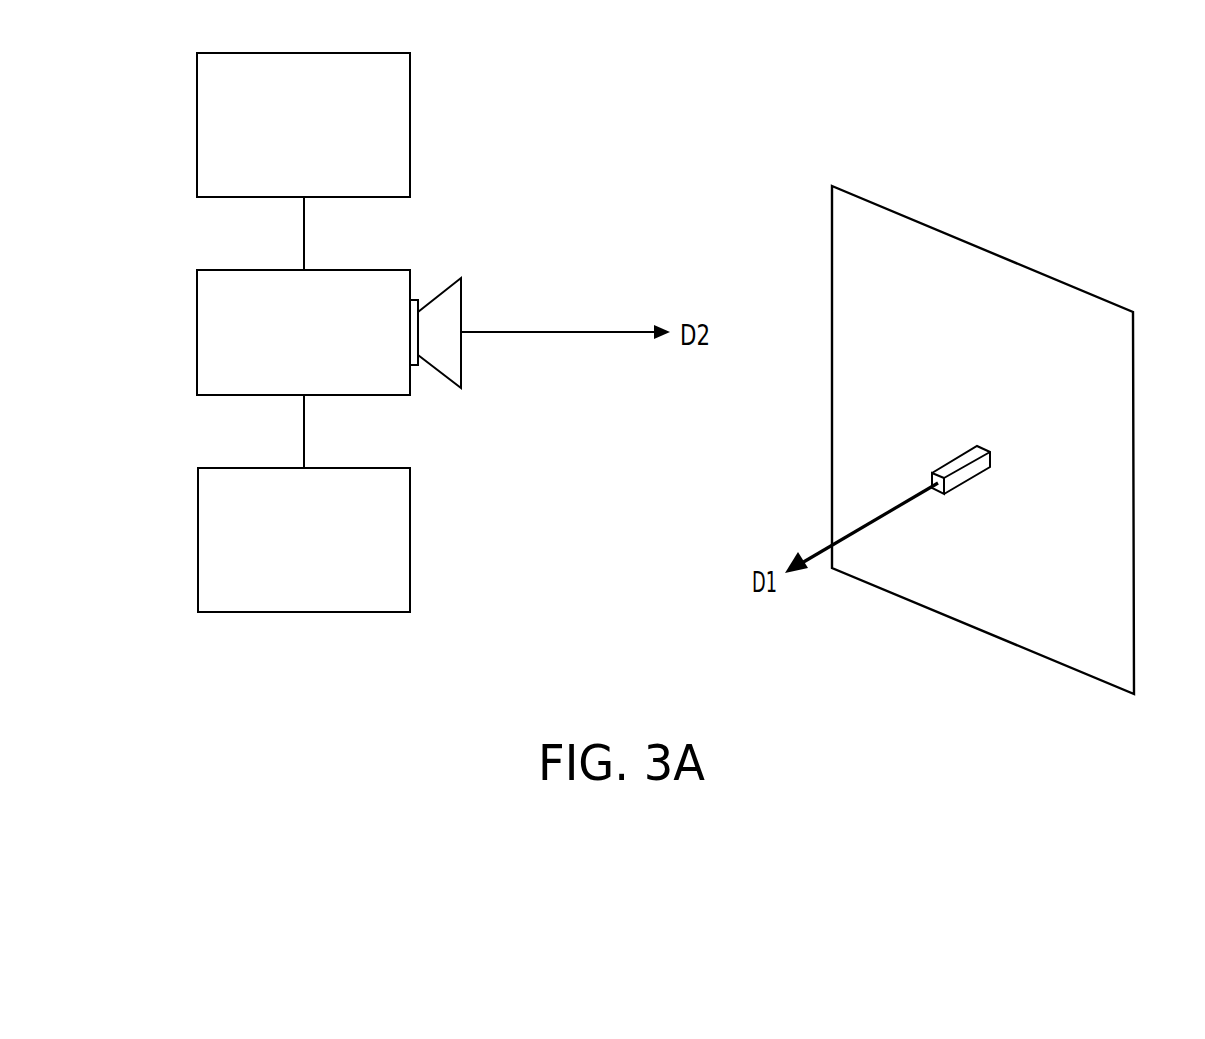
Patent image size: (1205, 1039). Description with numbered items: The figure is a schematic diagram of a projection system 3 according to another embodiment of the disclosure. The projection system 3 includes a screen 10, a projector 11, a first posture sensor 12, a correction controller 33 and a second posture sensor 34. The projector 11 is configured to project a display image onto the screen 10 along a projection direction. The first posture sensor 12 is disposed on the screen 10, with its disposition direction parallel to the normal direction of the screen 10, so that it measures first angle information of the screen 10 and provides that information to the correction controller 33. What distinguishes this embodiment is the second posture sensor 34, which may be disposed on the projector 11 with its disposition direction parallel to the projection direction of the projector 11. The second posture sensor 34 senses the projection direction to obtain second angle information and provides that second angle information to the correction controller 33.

The projection system 3 is at (190, 703).
The screen 10 is at (977, 257).
The projector 11 is at (329, 332).
The first posture sensor 12 is at (967, 458).
The correction controller 33 is at (304, 540).
The second posture sensor 34 is at (303, 125).